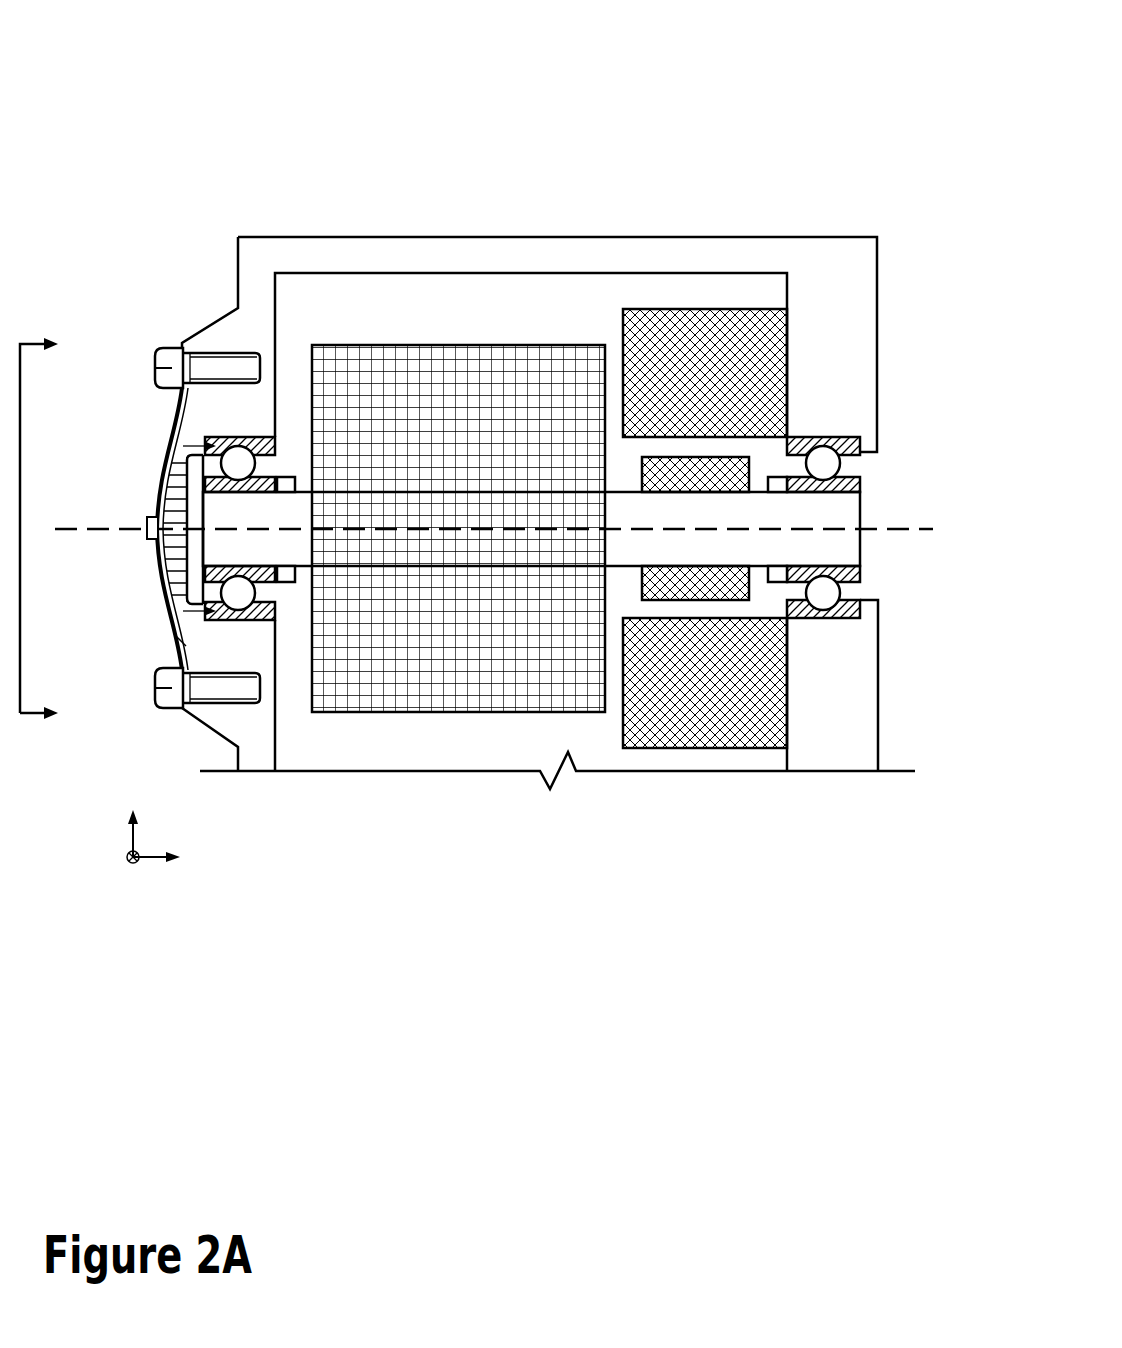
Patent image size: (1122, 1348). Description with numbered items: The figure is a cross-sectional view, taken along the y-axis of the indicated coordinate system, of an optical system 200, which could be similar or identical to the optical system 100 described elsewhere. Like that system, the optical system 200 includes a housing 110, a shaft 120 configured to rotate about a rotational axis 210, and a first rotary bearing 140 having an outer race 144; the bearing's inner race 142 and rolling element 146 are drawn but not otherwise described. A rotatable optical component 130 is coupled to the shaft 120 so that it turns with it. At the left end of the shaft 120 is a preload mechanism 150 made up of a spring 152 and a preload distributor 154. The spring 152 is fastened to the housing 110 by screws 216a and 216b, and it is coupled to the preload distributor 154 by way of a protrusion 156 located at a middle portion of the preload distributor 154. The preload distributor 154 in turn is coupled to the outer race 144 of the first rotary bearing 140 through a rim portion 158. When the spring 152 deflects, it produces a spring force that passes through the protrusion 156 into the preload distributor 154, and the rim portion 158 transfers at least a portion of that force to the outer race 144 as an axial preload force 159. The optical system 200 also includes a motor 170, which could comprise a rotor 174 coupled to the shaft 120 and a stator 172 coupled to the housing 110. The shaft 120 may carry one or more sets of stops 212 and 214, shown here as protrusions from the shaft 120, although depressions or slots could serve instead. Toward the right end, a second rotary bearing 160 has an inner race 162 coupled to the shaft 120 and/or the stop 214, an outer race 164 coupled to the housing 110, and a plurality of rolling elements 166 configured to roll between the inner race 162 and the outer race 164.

The optical system 100 is at (600, 164).
The housing 110 is at (377, 236).
The shaft 120 is at (864, 511).
The rotatable optical component 130 is at (433, 345).
The first rotary bearing 140 is at (255, 580).
The inner race of first bearing 142 is at (263, 495).
The outer race 144 is at (266, 435).
The ball of first bearing 146 is at (256, 463).
The preload mechanism 150 is at (126, 528).
The spring 152 is at (168, 430).
The preload distributor 154 is at (163, 580).
The protrusion 156 is at (148, 538).
The rim portion 158 is at (165, 613).
The axial preload force 159 is at (177, 642).
The second rotary bearing 160 is at (850, 577).
The inner race 162 is at (841, 498).
The outer race 164 is at (800, 437).
The rolling elements 166 is at (846, 464).
The motor 170 is at (667, 468).
The stator 172 is at (622, 322).
The rotor 174 is at (659, 457).
The optical system 200 is at (841, 80).
The rotational axis 210 is at (918, 532).
The stops 212 is at (288, 496).
The stops 214 is at (781, 498).
The screw 216a is at (167, 344).
The screw 216b is at (157, 708).